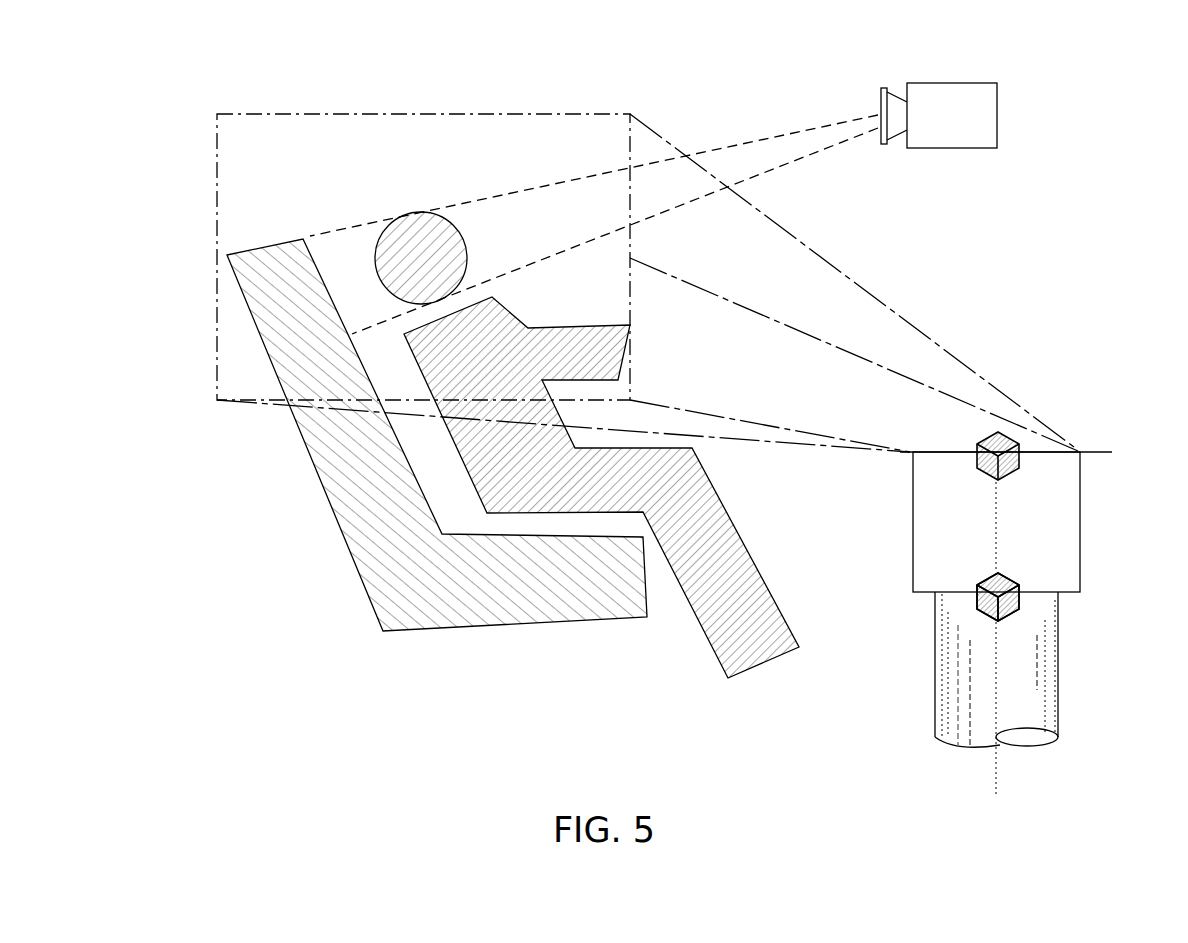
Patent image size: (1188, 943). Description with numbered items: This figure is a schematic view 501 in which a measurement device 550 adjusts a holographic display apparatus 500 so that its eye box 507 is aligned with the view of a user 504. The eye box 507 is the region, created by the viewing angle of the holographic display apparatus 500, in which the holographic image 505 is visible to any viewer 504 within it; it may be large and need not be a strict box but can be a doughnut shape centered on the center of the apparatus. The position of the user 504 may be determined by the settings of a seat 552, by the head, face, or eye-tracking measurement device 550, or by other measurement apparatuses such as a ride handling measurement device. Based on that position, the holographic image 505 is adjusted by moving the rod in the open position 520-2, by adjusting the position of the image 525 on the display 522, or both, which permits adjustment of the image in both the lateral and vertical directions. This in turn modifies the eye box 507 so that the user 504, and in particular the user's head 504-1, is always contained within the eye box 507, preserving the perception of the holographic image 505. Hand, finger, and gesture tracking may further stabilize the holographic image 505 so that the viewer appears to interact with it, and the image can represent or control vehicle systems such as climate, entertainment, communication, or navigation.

The schematic view 501 is at (182, 62).
The eye box 507 is at (233, 170).
The user 504 is at (527, 459).
The user's head 504-1 is at (453, 274).
The seat 552 is at (407, 601).
The measurement device 550 is at (932, 129).
The holographic display apparatus 500 is at (1089, 516).
The holographic image 505 is at (984, 479).
The display 522 is at (981, 619).
The image 525 is at (998, 597).
The rod in the open position 520-2 is at (1010, 668).